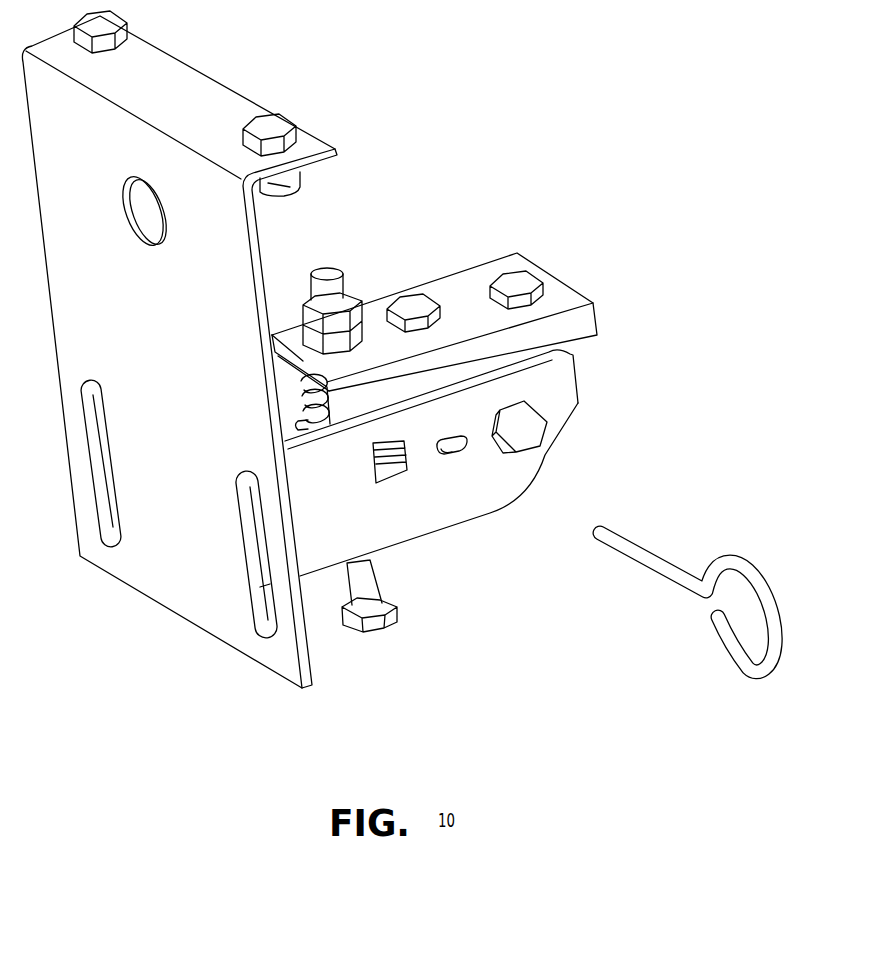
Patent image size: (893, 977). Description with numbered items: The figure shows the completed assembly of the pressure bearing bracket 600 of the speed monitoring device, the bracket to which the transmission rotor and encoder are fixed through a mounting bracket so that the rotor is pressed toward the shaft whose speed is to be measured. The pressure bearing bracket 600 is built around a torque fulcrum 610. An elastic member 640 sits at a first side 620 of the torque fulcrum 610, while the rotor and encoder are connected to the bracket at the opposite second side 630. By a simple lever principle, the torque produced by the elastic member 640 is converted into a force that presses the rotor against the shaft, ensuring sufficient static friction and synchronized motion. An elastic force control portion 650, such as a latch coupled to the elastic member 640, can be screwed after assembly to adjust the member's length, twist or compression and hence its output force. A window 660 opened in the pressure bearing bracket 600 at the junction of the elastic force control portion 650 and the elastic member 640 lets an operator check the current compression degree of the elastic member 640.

The pressure bearing bracket 600 is at (176, 508).
The torque fulcrum 610 is at (523, 430).
The first side 620 is at (472, 490).
The second side 630 is at (552, 387).
The elastic member 640 is at (325, 387).
The elastic force control portion 650 is at (670, 572).
The window 660 is at (387, 473).